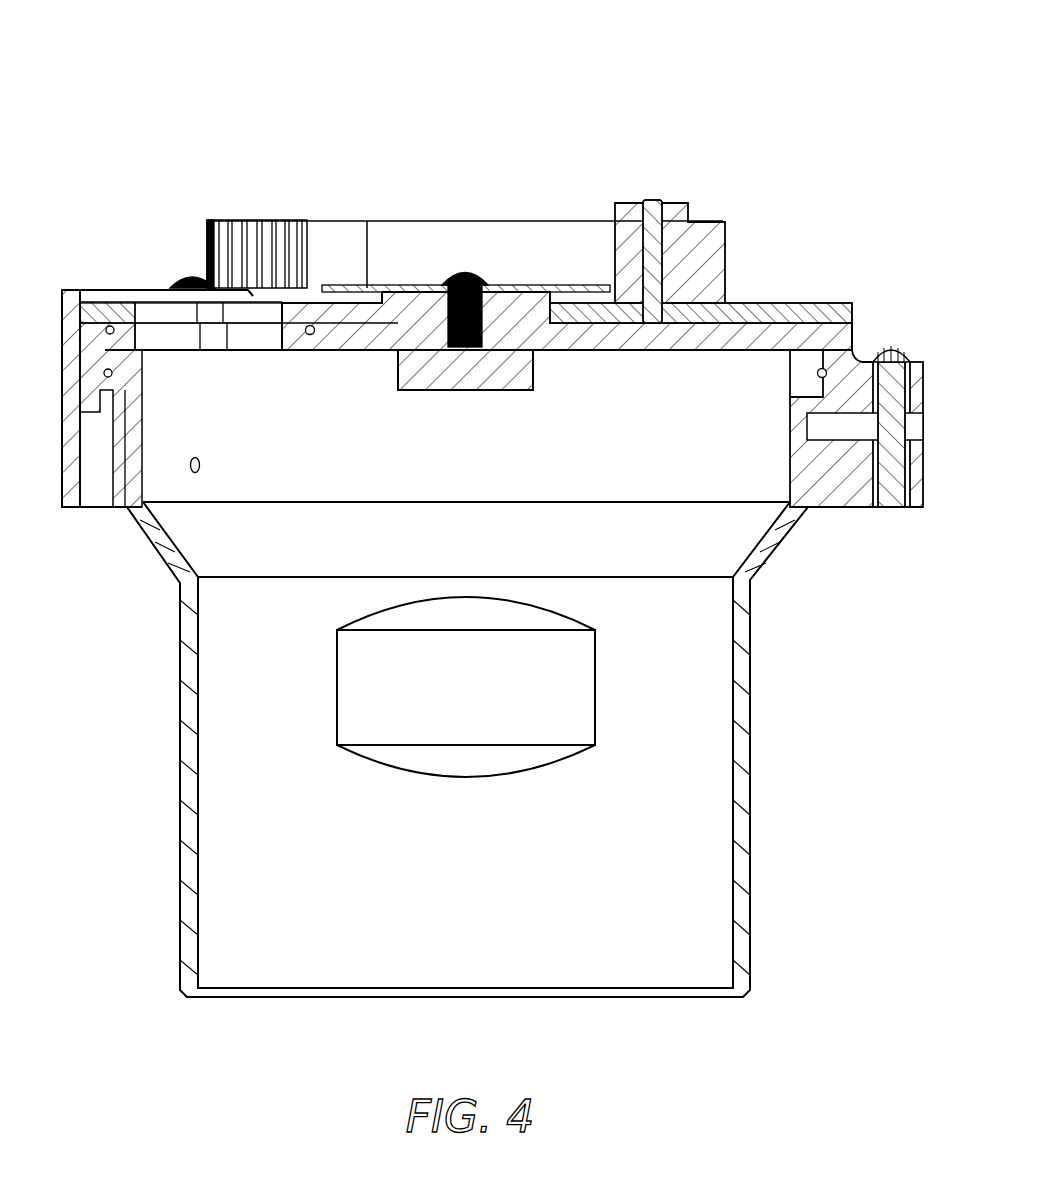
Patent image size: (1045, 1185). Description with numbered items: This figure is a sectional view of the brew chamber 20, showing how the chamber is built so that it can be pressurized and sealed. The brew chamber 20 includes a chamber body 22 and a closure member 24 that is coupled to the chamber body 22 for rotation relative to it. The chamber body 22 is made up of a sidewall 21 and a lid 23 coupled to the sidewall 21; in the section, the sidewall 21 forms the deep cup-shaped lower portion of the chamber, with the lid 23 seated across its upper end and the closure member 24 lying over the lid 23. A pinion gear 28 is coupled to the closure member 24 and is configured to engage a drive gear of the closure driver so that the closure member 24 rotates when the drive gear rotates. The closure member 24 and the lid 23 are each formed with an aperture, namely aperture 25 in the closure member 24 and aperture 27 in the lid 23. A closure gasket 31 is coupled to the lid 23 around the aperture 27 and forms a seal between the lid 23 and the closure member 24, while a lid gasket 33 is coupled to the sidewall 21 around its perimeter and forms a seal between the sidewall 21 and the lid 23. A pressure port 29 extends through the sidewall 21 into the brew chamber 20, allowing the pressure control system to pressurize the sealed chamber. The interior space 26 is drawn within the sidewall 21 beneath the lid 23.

The brew chamber 20 is at (472, 515).
The sidewall 21 is at (176, 717).
The chamber body 22 is at (132, 888).
The lid 23 is at (598, 354).
The closure member 24 is at (815, 300).
The aperture 25 is at (270, 310).
The internal cavity / reservoir 26 is at (487, 934).
The aperture 27 is at (242, 352).
The pinion gear 28 is at (700, 208).
The pressure port 29 is at (195, 480).
The closure gasket 31 is at (314, 337).
The lid gasket 33 is at (810, 374).